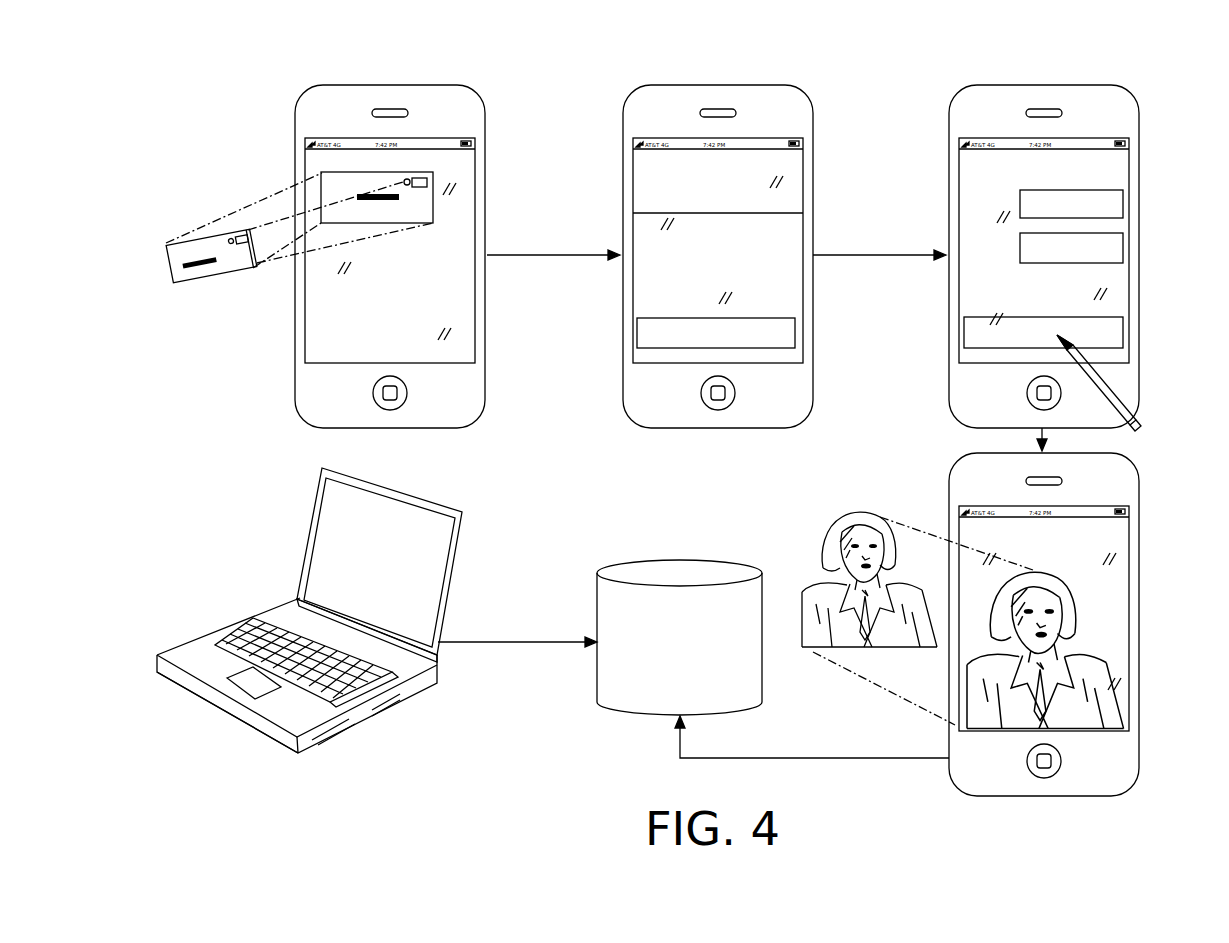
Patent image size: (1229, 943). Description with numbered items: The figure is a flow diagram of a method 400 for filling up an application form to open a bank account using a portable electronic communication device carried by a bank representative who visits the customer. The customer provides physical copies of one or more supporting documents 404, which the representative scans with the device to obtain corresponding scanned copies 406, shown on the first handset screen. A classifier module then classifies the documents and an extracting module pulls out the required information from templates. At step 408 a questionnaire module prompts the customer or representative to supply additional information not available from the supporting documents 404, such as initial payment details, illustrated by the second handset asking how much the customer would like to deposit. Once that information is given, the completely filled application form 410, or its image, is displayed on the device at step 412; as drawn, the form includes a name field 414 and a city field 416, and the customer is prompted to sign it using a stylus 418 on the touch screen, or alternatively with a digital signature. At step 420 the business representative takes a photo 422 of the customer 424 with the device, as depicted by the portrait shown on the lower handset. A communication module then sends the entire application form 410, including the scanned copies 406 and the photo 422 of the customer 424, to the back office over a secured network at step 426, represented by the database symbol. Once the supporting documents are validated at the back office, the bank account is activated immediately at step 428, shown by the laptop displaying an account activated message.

The method 400 is at (573, 75).
The supporting documents 404 is at (210, 284).
The scanned copies 406 is at (360, 172).
The step of prompting for additional information 408 is at (623, 323).
The application form 410 is at (1037, 238).
The step of displaying the filled form 412 is at (1037, 256).
The name field 414 is at (1123, 205).
The city field 416 is at (1123, 248).
The stylus 418 is at (1140, 418).
The step of taking a photo 420 is at (1074, 624).
The photo 422 is at (1063, 597).
The customer 424 is at (843, 520).
The step of sending to back office 426 is at (680, 560).
The step of account activation 428 is at (438, 500).